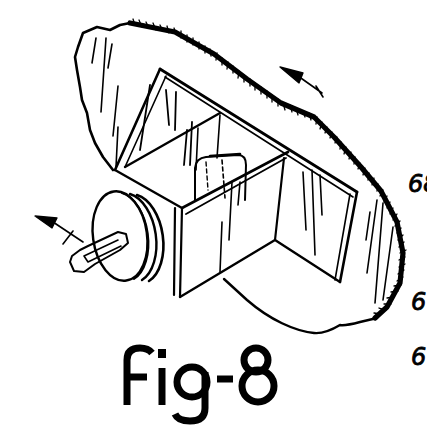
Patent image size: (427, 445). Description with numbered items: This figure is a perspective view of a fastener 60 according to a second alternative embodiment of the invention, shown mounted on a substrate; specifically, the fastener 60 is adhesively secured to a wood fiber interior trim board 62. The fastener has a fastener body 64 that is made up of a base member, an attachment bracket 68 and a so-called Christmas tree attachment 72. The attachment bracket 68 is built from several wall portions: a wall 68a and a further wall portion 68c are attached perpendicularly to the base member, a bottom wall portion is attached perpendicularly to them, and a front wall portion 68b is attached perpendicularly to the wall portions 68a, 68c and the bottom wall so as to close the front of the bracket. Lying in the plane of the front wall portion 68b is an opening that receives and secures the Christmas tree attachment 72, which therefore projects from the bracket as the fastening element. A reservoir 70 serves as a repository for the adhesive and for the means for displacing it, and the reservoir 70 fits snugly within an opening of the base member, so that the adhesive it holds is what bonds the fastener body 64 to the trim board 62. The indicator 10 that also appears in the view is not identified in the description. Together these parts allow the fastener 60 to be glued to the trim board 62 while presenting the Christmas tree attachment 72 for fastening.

The article locking apparatus (section view indicator) 10 is at (302, 41).
The fastener 60 is at (135, 140).
The wood fiber interior trim board 62 is at (338, 320).
The fastener body 64 is at (279, 137).
The attachment bracket 68 is at (205, 280).
The wall 68a is at (256, 248).
The front wall portion 68b is at (166, 288).
The wall portion 68c is at (198, 122).
The reservoir 70 is at (228, 152).
The Christmas tree attachment 72 is at (122, 268).